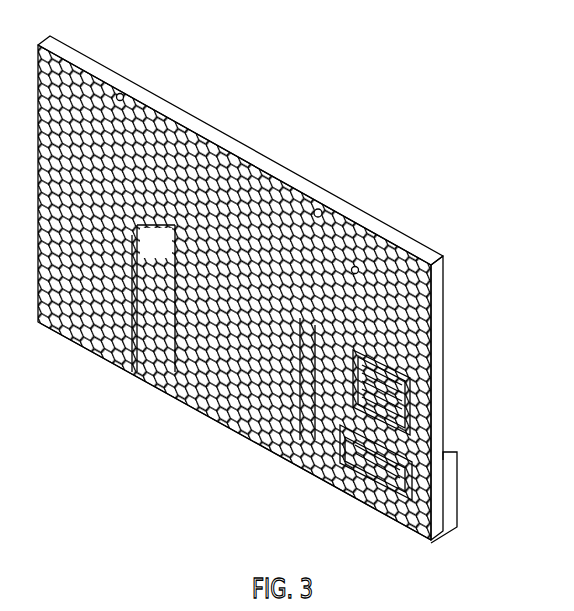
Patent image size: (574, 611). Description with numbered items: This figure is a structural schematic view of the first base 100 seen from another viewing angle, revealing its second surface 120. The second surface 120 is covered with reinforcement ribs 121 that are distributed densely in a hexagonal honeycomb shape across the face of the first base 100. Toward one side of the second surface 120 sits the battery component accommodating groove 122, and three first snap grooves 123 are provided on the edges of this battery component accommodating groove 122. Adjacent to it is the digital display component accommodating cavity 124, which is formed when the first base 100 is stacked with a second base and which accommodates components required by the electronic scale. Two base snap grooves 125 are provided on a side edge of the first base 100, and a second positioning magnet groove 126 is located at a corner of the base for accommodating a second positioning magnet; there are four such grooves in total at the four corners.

The first base 100 is at (520, 84).
The second surface 120 is at (341, 215).
The reinforcement ribs 121 is at (230, 153).
The battery component accommodating groove 122 is at (423, 357).
The first snap grooves 123 is at (413, 403).
The digital display component accommodating cavity 124 is at (413, 435).
The base snap grooves 125 is at (260, 448).
The second positioning magnet grooves 126 is at (322, 213).